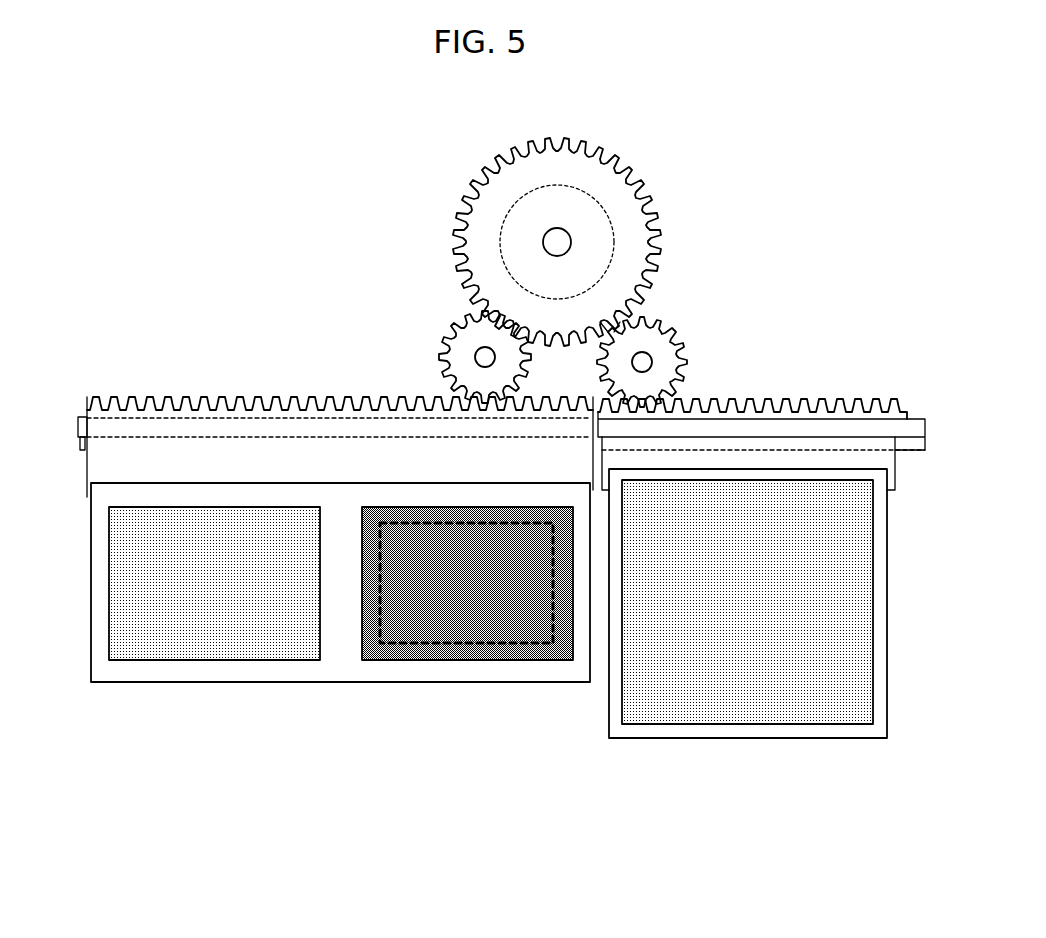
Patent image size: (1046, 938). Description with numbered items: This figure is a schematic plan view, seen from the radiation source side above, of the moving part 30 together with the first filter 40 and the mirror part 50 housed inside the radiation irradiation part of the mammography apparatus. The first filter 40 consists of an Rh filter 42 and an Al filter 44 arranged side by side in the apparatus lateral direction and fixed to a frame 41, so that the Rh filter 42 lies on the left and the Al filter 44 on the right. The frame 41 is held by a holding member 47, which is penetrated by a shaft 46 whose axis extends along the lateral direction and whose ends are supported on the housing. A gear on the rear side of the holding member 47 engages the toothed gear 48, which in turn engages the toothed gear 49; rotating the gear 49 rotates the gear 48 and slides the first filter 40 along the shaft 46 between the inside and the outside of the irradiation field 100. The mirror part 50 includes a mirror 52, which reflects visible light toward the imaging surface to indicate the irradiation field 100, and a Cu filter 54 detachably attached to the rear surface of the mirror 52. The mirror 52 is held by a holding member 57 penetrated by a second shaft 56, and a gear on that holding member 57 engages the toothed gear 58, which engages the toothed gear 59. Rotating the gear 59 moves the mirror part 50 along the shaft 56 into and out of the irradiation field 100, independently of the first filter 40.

The moving part 30 is at (736, 192).
The first filter 40 is at (92, 552).
The frame 41 is at (327, 665).
The Rh filter 42 is at (207, 661).
The Al filter 44 is at (453, 662).
The shaft 46 is at (87, 417).
The holding member 47 is at (107, 468).
The toothed gear 48 is at (460, 366).
The toothed gear 49 is at (497, 216).
The mirror part 50 is at (655, 740).
The mirror 52 is at (718, 741).
The Cu filter 54 is at (829, 695).
The shaft 56 is at (918, 445).
The holding member 57 is at (886, 462).
The toothed gear 58 is at (687, 361).
The toothed gear 59 is at (625, 291).
The irradiation field 100 is at (393, 645).